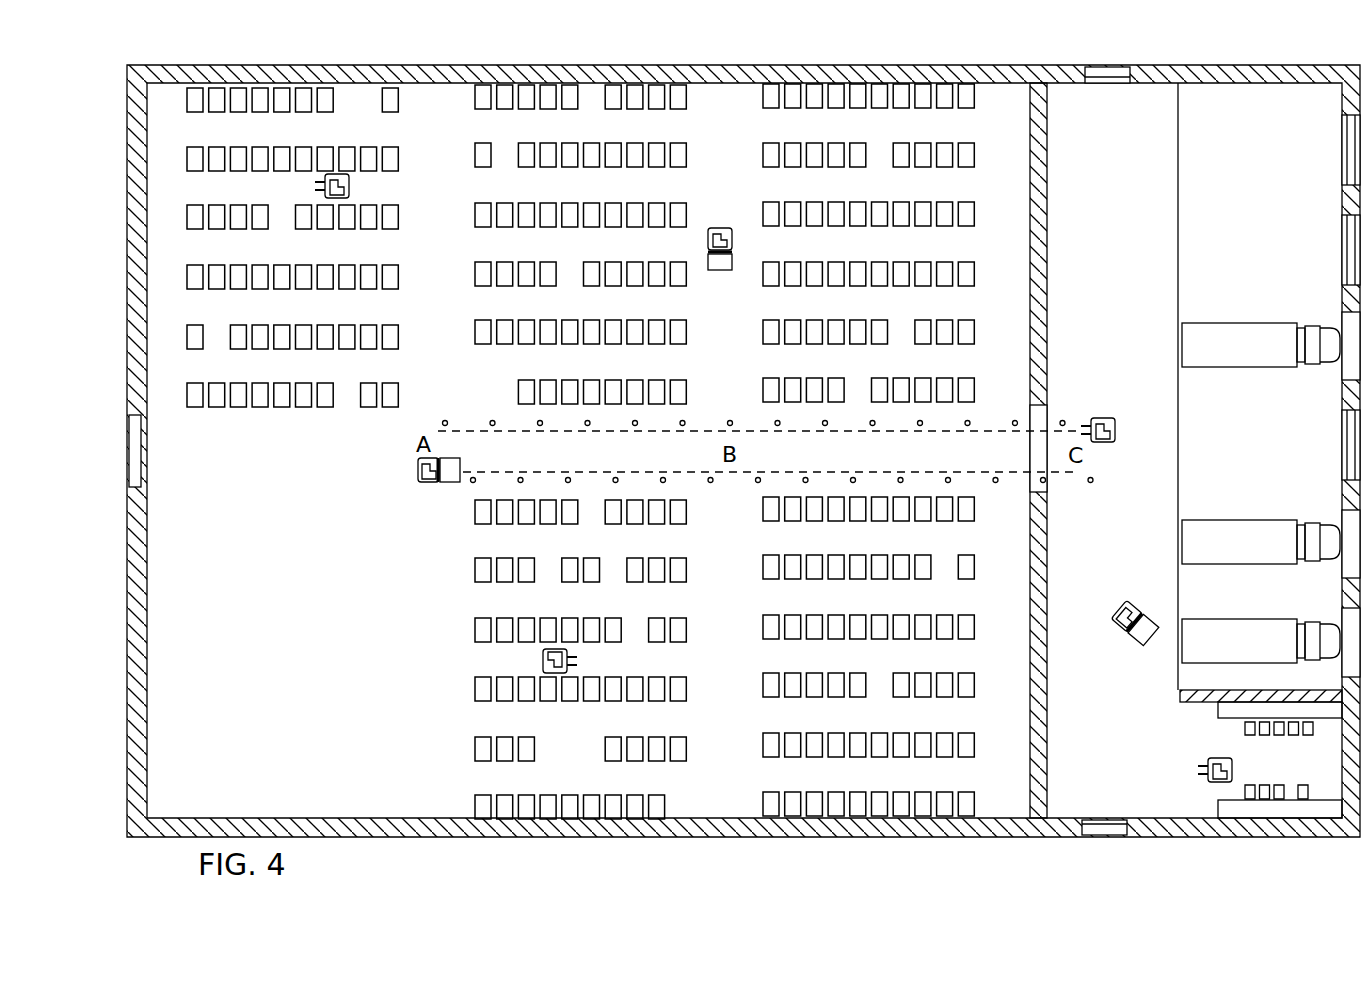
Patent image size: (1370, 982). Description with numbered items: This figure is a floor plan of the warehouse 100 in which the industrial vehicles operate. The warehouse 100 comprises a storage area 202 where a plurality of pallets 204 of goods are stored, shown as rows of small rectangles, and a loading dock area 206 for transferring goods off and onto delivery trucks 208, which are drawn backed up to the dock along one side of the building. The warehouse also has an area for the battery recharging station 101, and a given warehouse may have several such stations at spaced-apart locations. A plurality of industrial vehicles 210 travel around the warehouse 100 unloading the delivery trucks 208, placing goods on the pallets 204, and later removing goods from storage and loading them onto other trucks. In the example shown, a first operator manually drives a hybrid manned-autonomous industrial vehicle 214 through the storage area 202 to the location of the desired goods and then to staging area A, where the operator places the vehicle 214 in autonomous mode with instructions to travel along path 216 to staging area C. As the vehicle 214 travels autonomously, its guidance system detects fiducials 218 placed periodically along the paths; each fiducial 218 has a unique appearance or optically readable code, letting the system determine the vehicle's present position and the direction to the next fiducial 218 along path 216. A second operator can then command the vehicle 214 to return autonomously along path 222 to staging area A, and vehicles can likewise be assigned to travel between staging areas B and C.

The warehouse 100 is at (598, 836).
The battery recharging station 101 is at (1303, 771).
The storage area 202 is at (285, 469).
The pallets 204 is at (400, 160).
The loading dock area 206 is at (1118, 548).
The delivery trucks 208 is at (1240, 353).
The industrial vehicles 210 is at (352, 183).
The hybrid manned-autonomous industrial vehicle 214 is at (418, 470).
The path 216 is at (738, 477).
The fiducials 218 is at (445, 419).
The path 222 is at (713, 428).